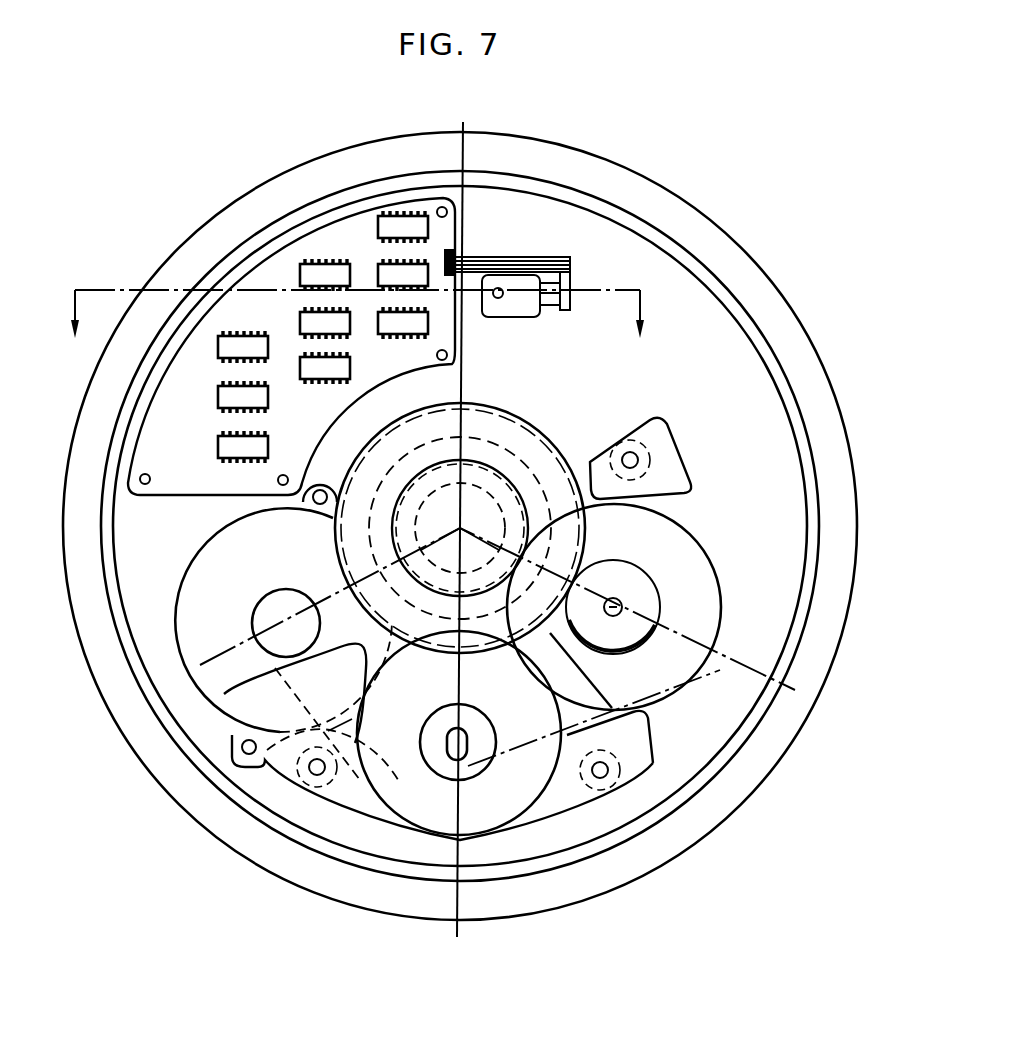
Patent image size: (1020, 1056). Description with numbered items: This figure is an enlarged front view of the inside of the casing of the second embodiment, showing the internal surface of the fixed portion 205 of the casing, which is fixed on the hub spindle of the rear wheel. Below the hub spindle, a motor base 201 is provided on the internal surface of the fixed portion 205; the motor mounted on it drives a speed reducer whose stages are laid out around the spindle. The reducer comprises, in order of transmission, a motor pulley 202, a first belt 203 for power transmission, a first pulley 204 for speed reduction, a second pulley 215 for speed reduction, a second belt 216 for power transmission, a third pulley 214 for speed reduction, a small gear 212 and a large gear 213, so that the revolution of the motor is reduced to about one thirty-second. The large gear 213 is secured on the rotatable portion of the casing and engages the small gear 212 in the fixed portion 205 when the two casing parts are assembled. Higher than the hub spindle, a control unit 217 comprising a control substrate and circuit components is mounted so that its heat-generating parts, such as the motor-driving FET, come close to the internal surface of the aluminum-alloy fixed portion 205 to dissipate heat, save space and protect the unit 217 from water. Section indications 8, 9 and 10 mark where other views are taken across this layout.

The fixed portion of the casing 205 is at (688, 228).
The control unit 217 is at (278, 258).
The large gear 213 is at (548, 462).
The motor base 201 is at (188, 656).
The motor pulley 202 is at (254, 622).
The first belt 203 is at (224, 694).
The first pulley 204 is at (397, 806).
The second pulley 215 is at (470, 762).
The second belt 216 is at (562, 736).
The small gear 212 is at (628, 645).
The third pulley 214 is at (690, 663).
The frame plate 8 is at (181, 664).
The section line 9- 9 is at (457, 534).
The section line 10- 10 is at (358, 332).